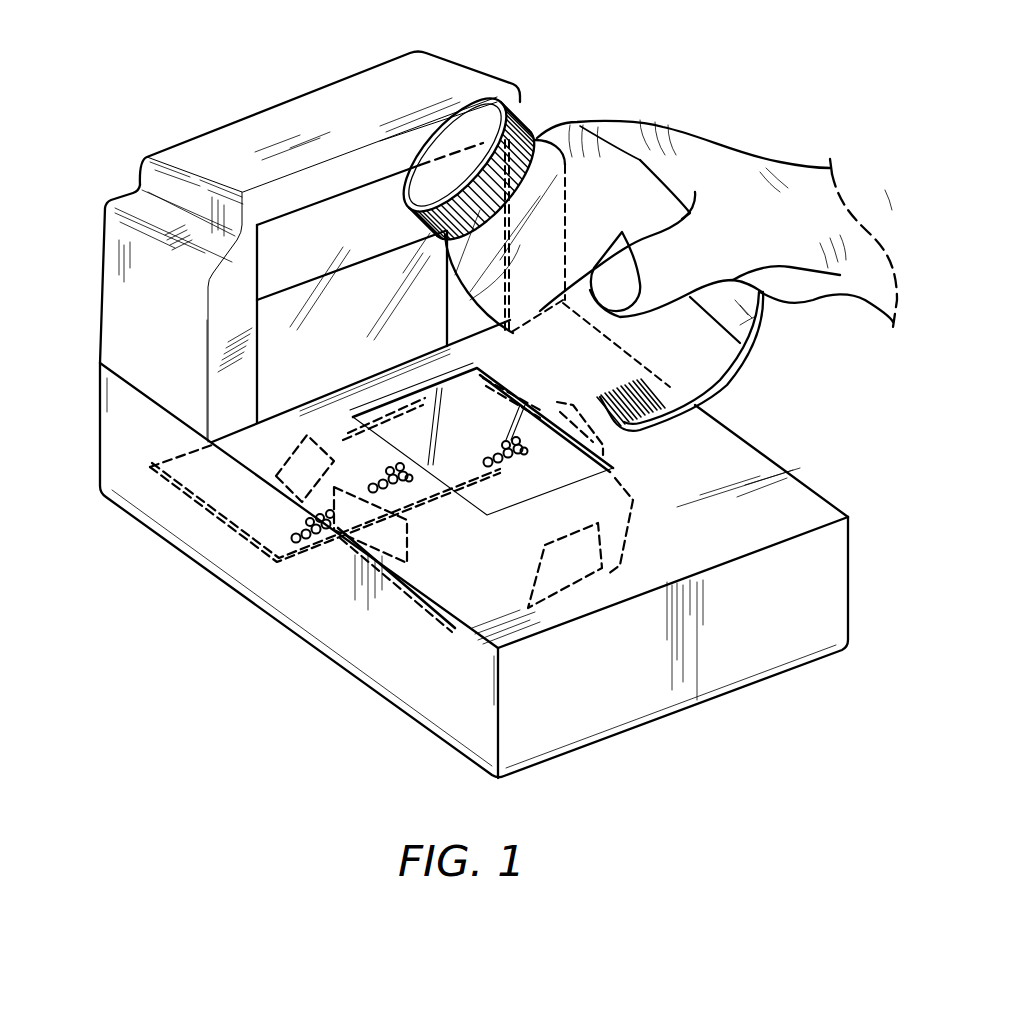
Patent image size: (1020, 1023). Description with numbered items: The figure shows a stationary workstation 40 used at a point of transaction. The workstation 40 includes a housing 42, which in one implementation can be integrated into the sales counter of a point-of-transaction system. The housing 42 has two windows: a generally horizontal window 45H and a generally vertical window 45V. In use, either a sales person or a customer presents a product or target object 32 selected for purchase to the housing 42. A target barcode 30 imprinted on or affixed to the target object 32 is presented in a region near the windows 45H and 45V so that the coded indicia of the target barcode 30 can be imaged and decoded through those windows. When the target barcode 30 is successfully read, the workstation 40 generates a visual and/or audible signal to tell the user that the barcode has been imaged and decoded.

The workstation 40 is at (143, 36).
The housing 42 is at (191, 153).
The generally vertical window 45V is at (277, 315).
The generally horizontal window 45H is at (476, 493).
The target object 32 is at (597, 192).
The target barcode 30 is at (655, 395).